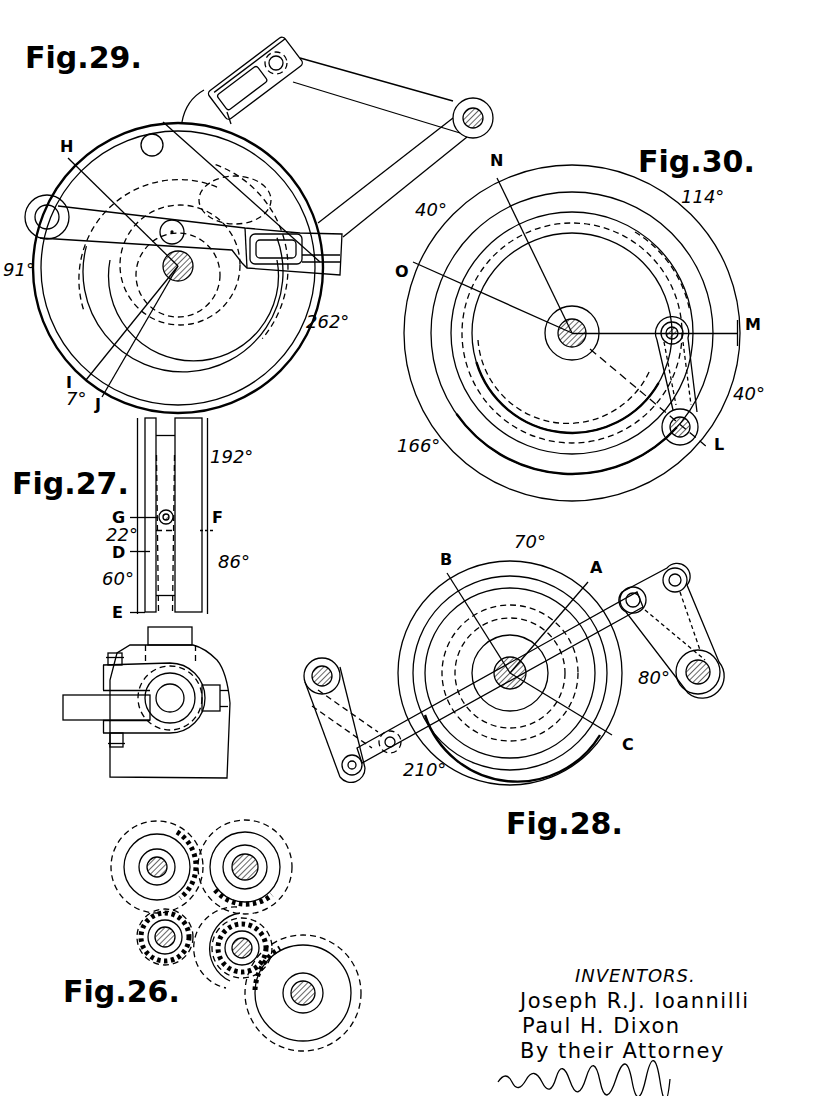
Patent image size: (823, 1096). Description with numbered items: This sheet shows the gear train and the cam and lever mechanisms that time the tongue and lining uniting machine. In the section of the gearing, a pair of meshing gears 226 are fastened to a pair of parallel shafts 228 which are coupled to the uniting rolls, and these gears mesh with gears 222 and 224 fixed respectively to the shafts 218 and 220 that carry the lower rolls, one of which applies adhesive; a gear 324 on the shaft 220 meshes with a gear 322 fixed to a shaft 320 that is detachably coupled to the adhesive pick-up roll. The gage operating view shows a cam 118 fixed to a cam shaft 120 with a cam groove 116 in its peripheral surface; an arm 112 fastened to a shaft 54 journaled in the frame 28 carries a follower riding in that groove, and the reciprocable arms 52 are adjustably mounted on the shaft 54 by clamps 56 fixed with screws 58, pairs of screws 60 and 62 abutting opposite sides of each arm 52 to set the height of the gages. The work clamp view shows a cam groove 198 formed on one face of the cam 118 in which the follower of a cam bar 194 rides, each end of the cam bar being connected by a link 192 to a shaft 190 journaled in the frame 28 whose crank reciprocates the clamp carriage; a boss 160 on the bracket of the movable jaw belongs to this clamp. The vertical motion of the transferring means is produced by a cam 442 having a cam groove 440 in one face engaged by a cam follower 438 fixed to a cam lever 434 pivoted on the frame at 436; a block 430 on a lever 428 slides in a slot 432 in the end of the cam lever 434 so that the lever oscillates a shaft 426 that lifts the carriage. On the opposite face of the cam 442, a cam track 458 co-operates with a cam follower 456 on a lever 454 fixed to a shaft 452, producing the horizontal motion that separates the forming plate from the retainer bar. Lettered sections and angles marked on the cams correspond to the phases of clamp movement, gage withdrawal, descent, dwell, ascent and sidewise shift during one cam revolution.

In FIG. 29, the cam shaft 120 is at (193, 267).
In FIG. 30, the cam shaft 120 is at (587, 333).
In FIG. 28, the cam shaft 120 is at (519, 690).
In FIG. 29, the cam 442 is at (262, 372).
In FIG. 30, the cam 442 is at (452, 411).
In FIG. 29, the cam groove 440 is at (238, 146).
In FIG. 29, the cam follower 438 is at (140, 140).
In FIG. 29, the pivot 436 is at (47, 205).
In FIG. 29, the cam lever 434 is at (187, 110).
In FIG. 29, the block 430 is at (296, 44).
In FIG. 29, the slot 432 is at (235, 78).
In FIG. 29, the lever 428 is at (405, 81).
In FIG. 29, the shaft 426 is at (494, 112).
In FIG. 30, the cam track 458 is at (456, 368).
In FIG. 30, the cam follower 456 is at (690, 312).
In FIG. 30, the lever 454 is at (693, 372).
In FIG. 30, the shaft 452 is at (686, 446).
In FIG. 28, the cam 118 is at (577, 752).
In FIG. 27, the cam 118 is at (203, 502).
In FIG. 28, the cam groove 198 is at (491, 605).
In FIG. 28, the link 192 is at (378, 712).
In FIG. 28, the shaft 190 is at (322, 665).
In FIG. 28, the boss 160 is at (630, 597).
In FIG. 28, the cam bar 194 is at (450, 745).
In FIG. 27, the cam groove 116 is at (167, 486).
In FIG. 27, the frame 28 is at (217, 736).
In FIG. 27, the arm 112 is at (193, 633).
In FIG. 27, the shaft 54 is at (176, 696).
In FIG. 27, the clamp 56 is at (150, 742).
In FIG. 27, the arm 52 is at (75, 700).
In FIG. 27, the screw 60 is at (112, 656).
In FIG. 27, the screw 62 is at (112, 745).
In FIG. 27, the screw 58 is at (220, 690).
In FIG. 26, the meshing gear 226 is at (120, 845).
In FIG. 26, the parallel shaft 228 is at (160, 862).
In FIG. 26, the gear 222 is at (140, 928).
In FIG. 26, the shaft 218 is at (156, 940).
In FIG. 26, the gear 224 is at (258, 935).
In FIG. 26, the gear 324 is at (256, 946).
In FIG. 26, the shaft 220 is at (234, 958).
In FIG. 26, the gear 322 is at (348, 958).
In FIG. 26, the shaft 320 is at (316, 993).